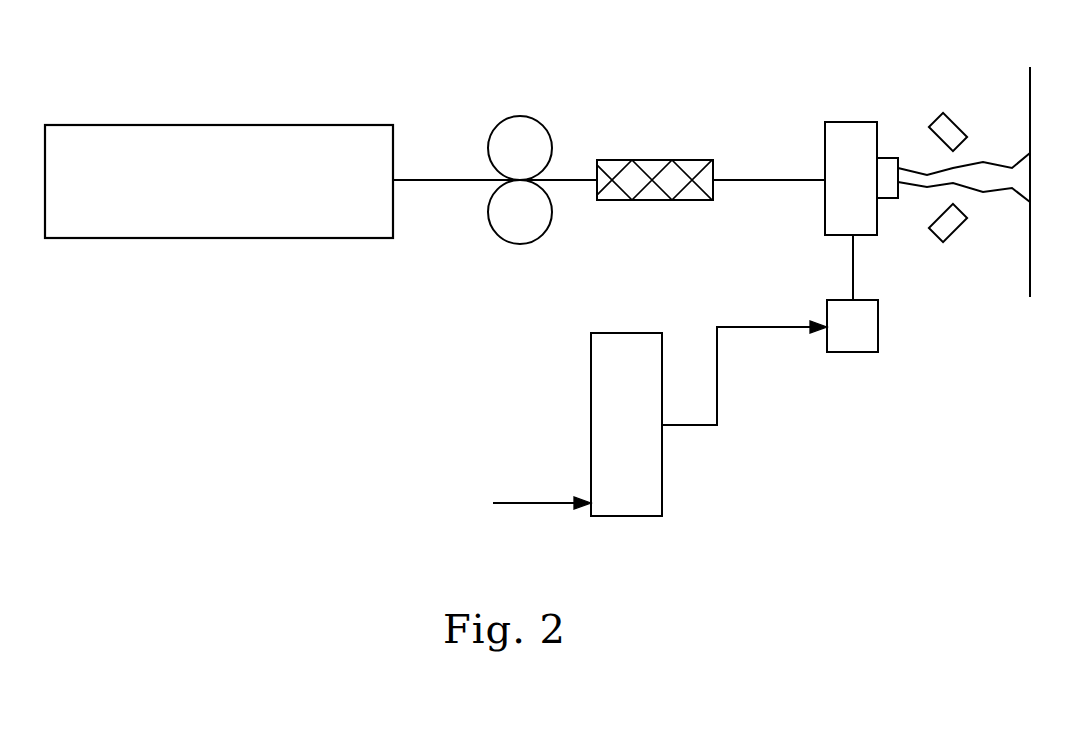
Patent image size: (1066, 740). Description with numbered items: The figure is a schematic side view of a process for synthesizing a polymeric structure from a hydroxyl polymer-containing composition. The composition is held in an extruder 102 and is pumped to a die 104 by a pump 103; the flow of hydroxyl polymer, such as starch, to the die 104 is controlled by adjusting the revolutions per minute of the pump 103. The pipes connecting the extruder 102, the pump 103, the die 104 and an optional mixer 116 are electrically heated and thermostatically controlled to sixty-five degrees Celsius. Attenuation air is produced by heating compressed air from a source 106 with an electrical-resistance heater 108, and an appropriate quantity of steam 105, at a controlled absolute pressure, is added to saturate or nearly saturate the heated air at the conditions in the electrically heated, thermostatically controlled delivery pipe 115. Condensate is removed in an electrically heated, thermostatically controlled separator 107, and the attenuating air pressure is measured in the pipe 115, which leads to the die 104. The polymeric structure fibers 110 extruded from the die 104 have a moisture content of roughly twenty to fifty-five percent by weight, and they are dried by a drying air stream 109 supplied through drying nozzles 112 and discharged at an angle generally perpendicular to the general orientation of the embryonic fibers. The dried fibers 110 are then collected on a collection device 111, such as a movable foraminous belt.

The extruder 102 is at (230, 240).
The pump 103 is at (488, 148).
The die 104 is at (862, 132).
The steam 105 is at (732, 323).
The source 106 is at (540, 503).
The separator 107 is at (853, 352).
The electrical-resistance heater 108 is at (662, 482).
The drying air stream 109 is at (932, 118).
The polymeric structure fibers 110 is at (1018, 200).
The collection device 111 is at (1030, 285).
The drying nozzles 112 is at (968, 140).
The delivery pipe 115 is at (852, 265).
The mixer 116 is at (676, 160).